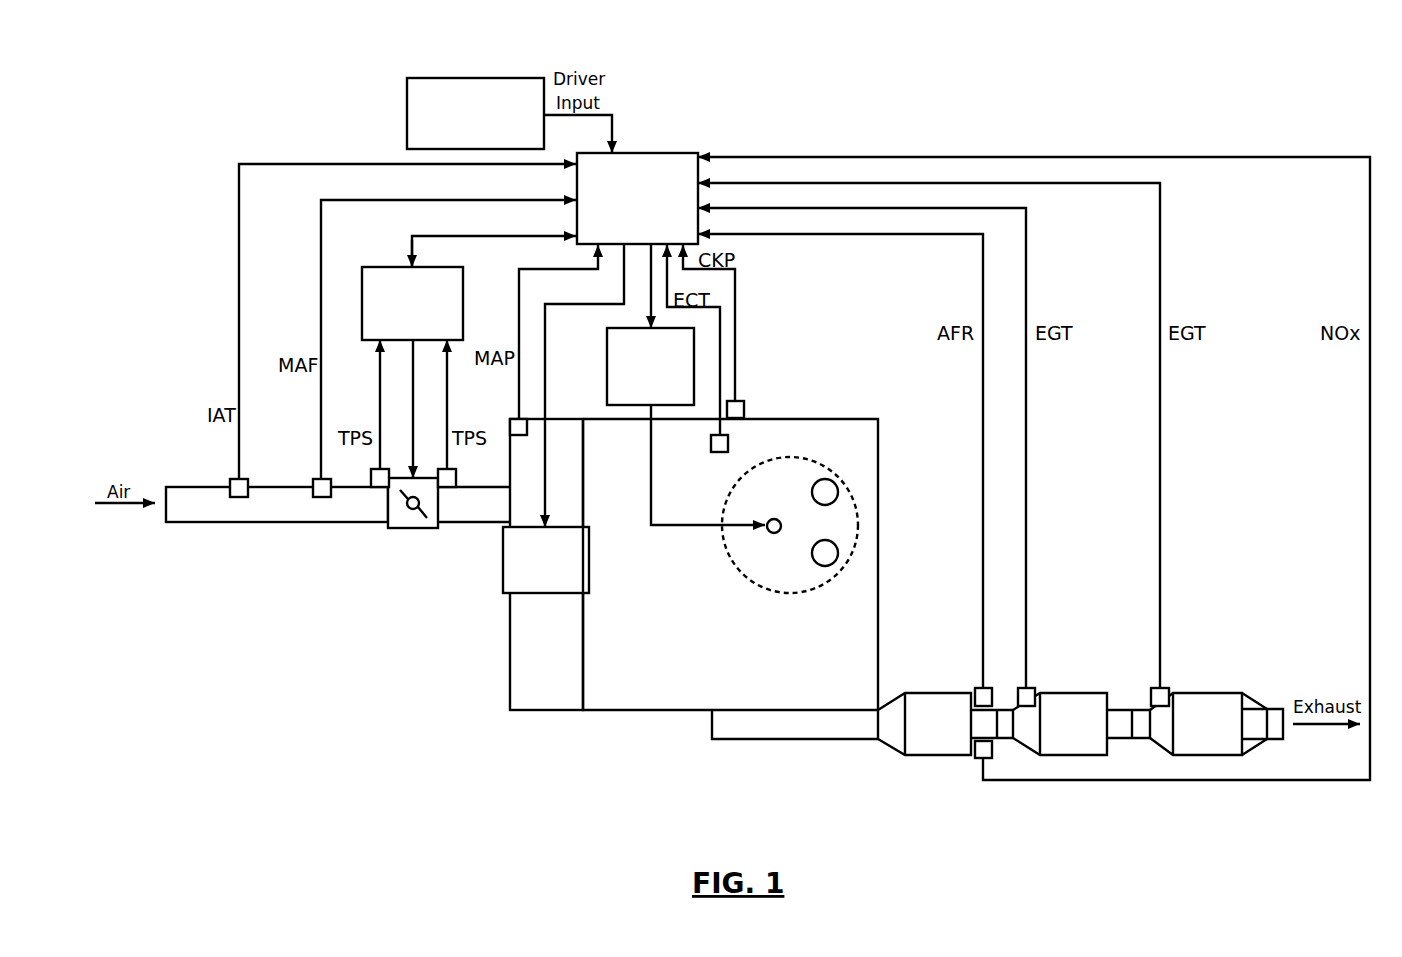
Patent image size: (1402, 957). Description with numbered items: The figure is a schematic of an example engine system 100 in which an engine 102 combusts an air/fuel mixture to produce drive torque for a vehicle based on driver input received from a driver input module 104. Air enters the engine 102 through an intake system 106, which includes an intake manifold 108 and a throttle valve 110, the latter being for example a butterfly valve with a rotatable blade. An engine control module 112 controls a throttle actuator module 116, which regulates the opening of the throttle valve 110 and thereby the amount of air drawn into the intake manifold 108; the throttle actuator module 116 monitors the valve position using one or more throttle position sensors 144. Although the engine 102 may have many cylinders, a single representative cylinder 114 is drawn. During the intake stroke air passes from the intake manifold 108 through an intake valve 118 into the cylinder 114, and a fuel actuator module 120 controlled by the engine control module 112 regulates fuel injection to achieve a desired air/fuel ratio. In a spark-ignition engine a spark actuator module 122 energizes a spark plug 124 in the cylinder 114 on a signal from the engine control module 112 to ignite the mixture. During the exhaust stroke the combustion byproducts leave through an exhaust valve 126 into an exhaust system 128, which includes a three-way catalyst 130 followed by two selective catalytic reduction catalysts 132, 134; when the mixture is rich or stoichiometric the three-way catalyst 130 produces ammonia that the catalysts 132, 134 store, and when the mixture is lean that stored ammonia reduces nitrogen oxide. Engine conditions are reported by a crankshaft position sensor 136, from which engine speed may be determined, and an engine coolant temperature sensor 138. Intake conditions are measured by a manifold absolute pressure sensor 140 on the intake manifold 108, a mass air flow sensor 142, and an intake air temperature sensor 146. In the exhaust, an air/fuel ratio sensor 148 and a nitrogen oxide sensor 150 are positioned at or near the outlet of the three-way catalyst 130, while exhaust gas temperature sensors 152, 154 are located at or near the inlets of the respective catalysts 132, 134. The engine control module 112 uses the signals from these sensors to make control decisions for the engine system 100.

The engine system 100 is at (164, 68).
The engine 102 is at (777, 419).
The driver input module 104 is at (407, 110).
The intake system 106 is at (185, 612).
The intake manifold 108 is at (510, 643).
The throttle valve 110 is at (410, 528).
The engine control module 112 is at (637, 153).
The cylinder 114 is at (752, 585).
The throttle actuator module 116 is at (388, 267).
The intake valve 118 is at (825, 479).
The fuel actuator module 120 is at (565, 593).
The spark actuator module 122 is at (607, 350).
The spark plug 124 is at (773, 519).
The exhaust valve 126 is at (825, 566).
The exhaust system 128 is at (1300, 828).
The three-way catalyst 130 is at (920, 693).
The selective catalytic reduction catalyst 132 is at (1072, 693).
The selective catalytic reduction catalyst 134 is at (1207, 693).
The crankshaft position sensor 136 is at (740, 401).
The engine coolant temperature sensor 138 is at (718, 452).
The manifold absolute pressure sensor 140 is at (510, 419).
The mass air flow sensor 142 is at (316, 480).
The throttle position sensor 144 is at (378, 490).
The intake air temperature sensor 146 is at (233, 480).
The air/fuel ratio sensor 148 is at (978, 688).
The nitrogen oxide sensor 150 is at (978, 758).
The exhaust gas temperature sensor 152 is at (1030, 688).
The exhaust gas temperature sensor 154 is at (1166, 688).